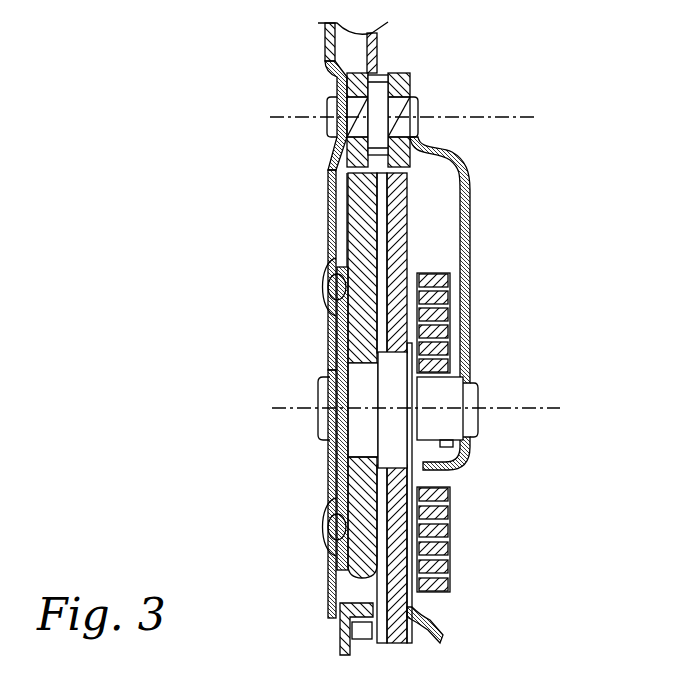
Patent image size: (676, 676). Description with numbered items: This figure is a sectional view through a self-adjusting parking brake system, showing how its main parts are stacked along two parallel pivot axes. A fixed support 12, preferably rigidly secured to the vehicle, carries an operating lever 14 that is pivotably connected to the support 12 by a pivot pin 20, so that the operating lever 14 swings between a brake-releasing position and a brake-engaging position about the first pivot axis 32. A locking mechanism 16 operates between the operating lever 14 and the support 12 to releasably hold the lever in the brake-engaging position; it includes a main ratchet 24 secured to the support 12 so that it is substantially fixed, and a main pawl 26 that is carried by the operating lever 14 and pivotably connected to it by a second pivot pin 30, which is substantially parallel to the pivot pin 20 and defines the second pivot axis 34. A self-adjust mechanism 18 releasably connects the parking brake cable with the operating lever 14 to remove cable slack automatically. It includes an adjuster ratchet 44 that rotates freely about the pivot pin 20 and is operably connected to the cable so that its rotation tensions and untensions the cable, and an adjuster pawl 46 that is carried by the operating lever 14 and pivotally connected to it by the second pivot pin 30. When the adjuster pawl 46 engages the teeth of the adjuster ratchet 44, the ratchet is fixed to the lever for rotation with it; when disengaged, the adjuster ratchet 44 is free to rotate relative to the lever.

The fixed support 12 is at (338, 650).
The operating lever 14 is at (328, 479).
The locking mechanism 16 is at (345, 197).
The self-adjust mechanism 18 is at (410, 222).
The pivot pin 20 is at (318, 403).
The main ratchet 24 is at (322, 283).
The main pawl 26 is at (330, 63).
The second pivot pin 30 is at (418, 100).
The first pivot axis 32 is at (507, 408).
The second pivot axis 34 is at (477, 116).
The adjuster ratchet 44 is at (405, 256).
The adjuster pawl 46 is at (383, 73).